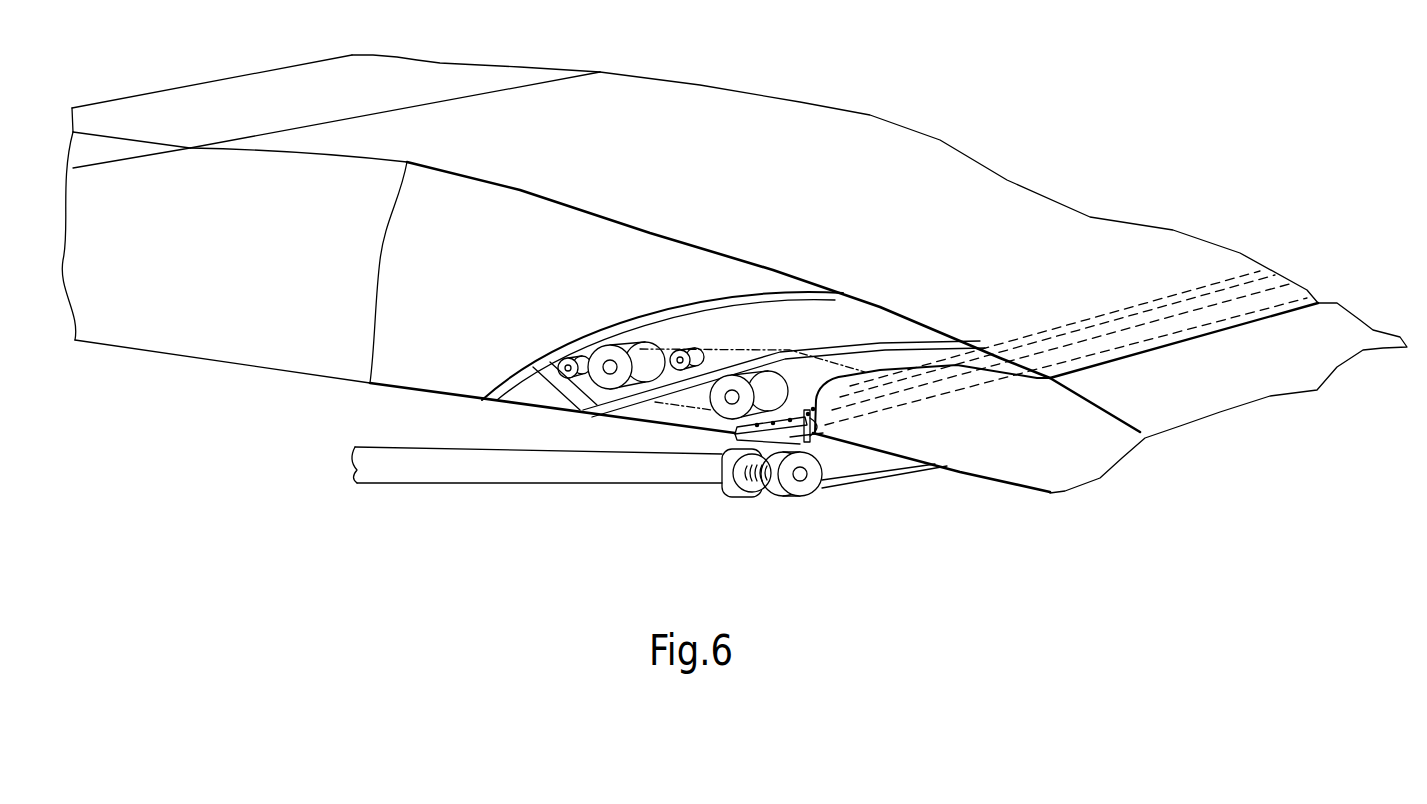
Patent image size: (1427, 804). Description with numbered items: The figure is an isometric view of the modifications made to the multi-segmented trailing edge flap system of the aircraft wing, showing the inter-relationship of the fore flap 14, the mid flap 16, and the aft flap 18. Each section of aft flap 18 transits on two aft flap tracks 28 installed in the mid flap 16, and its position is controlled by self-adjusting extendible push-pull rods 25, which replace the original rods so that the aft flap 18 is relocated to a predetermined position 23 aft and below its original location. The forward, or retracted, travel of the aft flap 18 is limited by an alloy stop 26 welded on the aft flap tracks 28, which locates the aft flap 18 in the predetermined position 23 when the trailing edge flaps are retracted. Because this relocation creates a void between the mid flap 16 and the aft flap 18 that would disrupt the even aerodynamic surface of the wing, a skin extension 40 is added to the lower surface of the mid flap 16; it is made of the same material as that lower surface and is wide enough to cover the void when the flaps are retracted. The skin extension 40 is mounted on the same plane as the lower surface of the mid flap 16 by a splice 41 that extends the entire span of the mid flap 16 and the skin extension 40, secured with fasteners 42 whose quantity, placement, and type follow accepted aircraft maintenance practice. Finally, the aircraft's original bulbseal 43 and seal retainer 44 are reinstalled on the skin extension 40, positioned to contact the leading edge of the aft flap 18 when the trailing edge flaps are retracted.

The fore flap 14 is at (405, 80).
The mid flap 16 is at (1092, 227).
The aft flap 18 is at (1363, 333).
The predetermined position 23 is at (1000, 480).
The self-adjusting extendible push-pull rod 25 is at (488, 470).
The alloy stop 26 is at (543, 363).
The aft flap track 28 is at (782, 330).
The skin extension 40 is at (750, 497).
The splice 41 is at (727, 440).
The fastener 42 is at (777, 420).
The bulbseal 43 is at (873, 423).
The seal retainer 44 is at (787, 493).